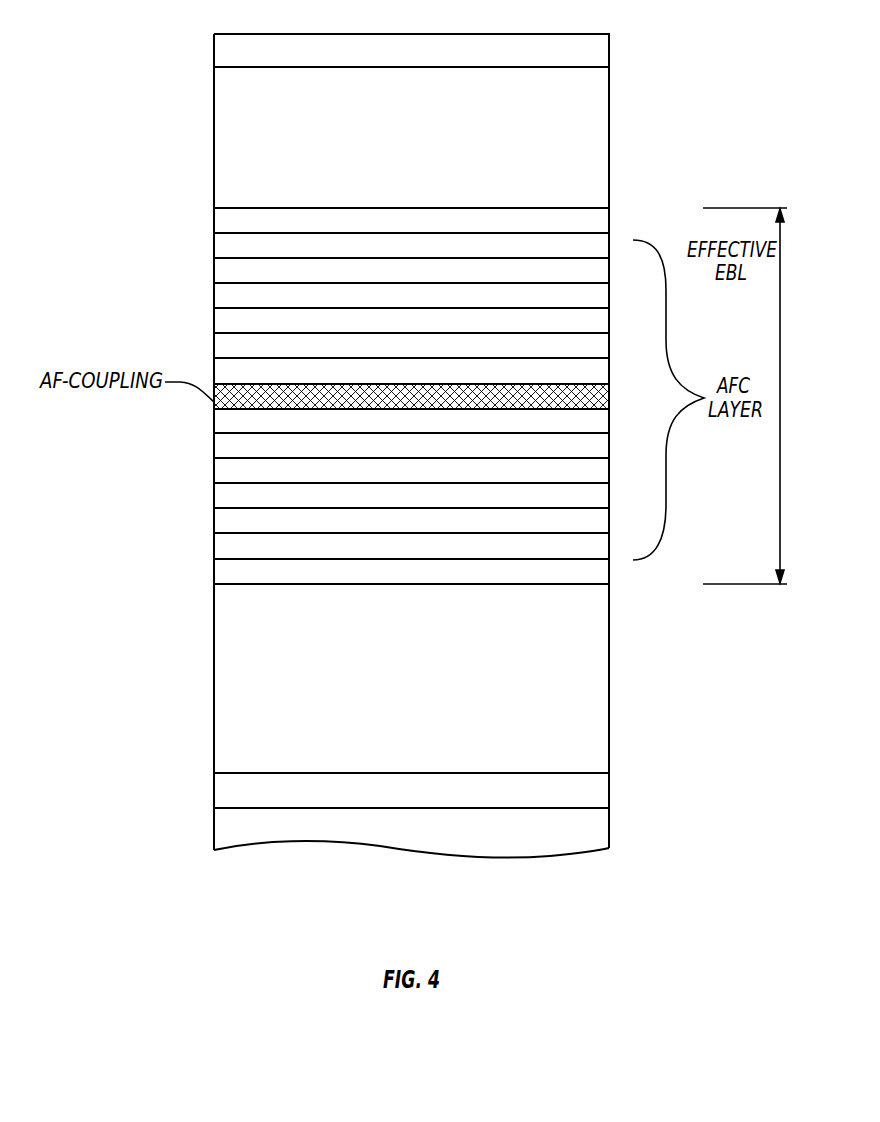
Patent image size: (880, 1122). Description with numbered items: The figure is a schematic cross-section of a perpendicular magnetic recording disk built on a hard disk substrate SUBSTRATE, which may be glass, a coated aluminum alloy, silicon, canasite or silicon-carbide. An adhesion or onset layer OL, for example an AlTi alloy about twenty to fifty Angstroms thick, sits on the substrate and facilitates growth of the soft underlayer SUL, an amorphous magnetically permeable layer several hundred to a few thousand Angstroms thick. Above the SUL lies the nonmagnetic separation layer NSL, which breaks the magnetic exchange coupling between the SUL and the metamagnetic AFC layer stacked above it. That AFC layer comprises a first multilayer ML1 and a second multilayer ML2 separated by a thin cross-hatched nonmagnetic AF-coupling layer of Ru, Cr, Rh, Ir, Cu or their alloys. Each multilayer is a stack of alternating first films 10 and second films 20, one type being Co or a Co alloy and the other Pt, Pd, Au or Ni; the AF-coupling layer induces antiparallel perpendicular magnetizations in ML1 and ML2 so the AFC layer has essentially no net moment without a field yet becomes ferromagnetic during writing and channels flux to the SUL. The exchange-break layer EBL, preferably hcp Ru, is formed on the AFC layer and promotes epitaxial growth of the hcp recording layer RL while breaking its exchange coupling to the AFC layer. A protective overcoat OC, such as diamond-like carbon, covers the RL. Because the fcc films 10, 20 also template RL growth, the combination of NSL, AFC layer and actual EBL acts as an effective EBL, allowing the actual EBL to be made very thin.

The first films 10 is at (605, 268).
The second films 20 is at (218, 245).
The overcoat OC is at (411, 53).
The recording layer RL is at (411, 168).
The exchange-break layer EBL is at (411, 221).
The first multilayer ML1 is at (168, 418).
The second multilayer ML2 is at (168, 233).
The nonmagnetic separation layer NSL is at (411, 573).
The soft underlayer SUL is at (411, 721).
The onset layer OL is at (411, 794).
The substrate SUBSTRATE is at (411, 837).